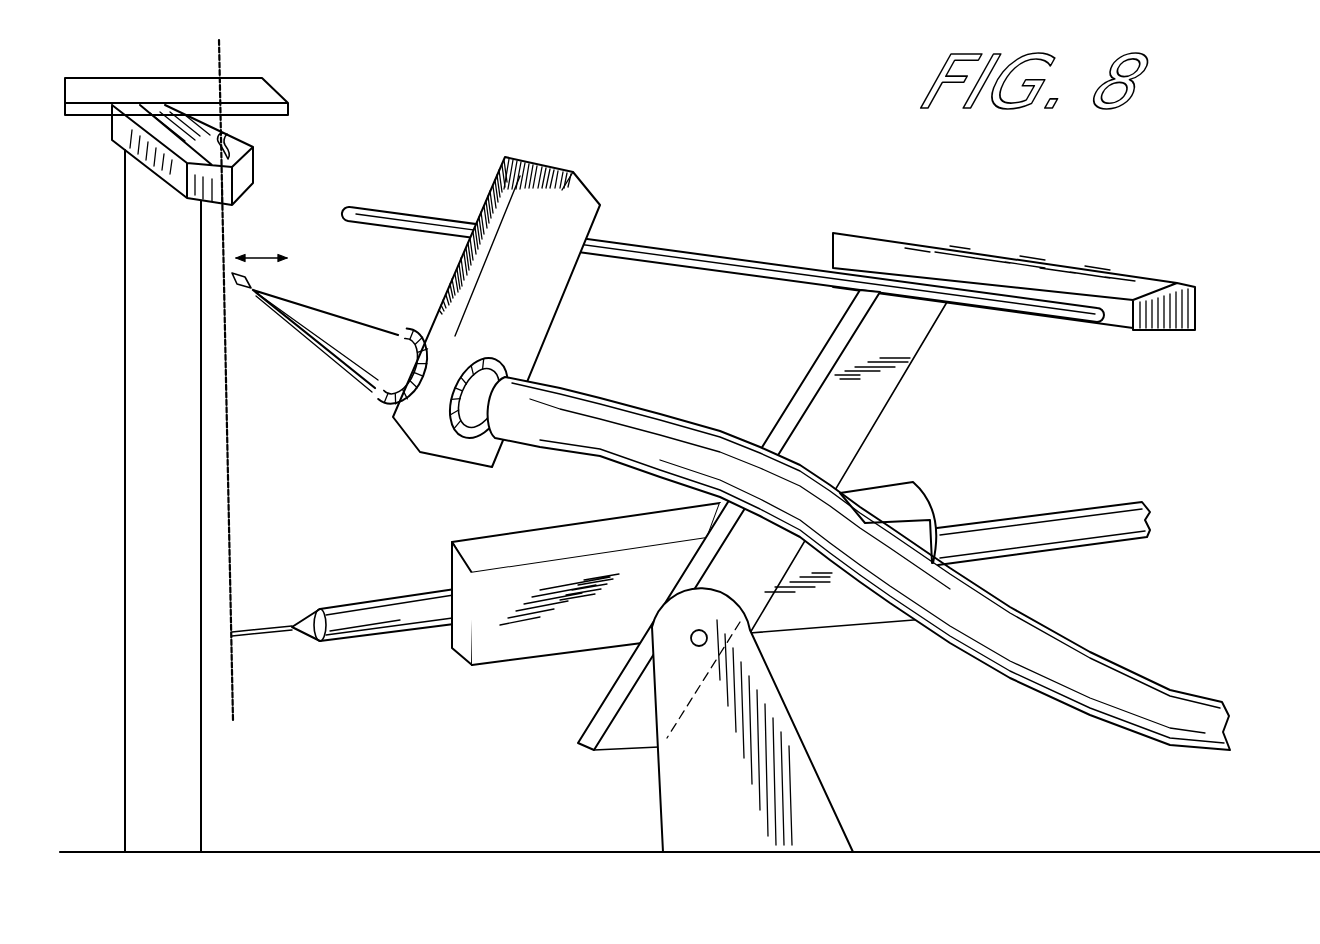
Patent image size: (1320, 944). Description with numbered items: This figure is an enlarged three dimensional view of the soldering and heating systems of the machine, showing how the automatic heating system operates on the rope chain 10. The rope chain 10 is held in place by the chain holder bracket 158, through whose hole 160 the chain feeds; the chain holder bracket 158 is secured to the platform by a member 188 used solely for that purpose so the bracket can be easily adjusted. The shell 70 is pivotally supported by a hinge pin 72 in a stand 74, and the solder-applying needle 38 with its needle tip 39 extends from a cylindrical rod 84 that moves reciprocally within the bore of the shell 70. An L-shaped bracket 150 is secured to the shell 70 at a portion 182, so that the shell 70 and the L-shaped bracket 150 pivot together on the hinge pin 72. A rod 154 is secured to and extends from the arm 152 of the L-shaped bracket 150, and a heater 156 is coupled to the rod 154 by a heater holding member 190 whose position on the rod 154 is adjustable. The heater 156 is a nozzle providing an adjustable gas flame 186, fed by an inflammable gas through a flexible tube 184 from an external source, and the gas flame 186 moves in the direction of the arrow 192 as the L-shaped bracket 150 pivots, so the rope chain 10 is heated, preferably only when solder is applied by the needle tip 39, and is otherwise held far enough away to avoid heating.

The rope chain 10 is at (234, 521).
The solder-applying needle 38 is at (264, 634).
The needle tip 39 is at (233, 632).
The shell 70 is at (915, 490).
The hinge pin 72 is at (712, 640).
The stand 74 is at (796, 767).
The cylindrical rod 84 is at (1097, 512).
The L-shaped bracket 150 is at (873, 398).
The arm 152 is at (1109, 272).
The rod 154 is at (683, 252).
The heater 156 is at (345, 365).
The chain holder bracket 158 is at (237, 147).
The hole 160 is at (200, 145).
The portion 182 is at (640, 645).
The flexible tube 184 is at (623, 428).
The gas flame 186 is at (252, 279).
The member 188 is at (140, 462).
The heater holding member 190 is at (537, 318).
The arrow 192 is at (265, 245).